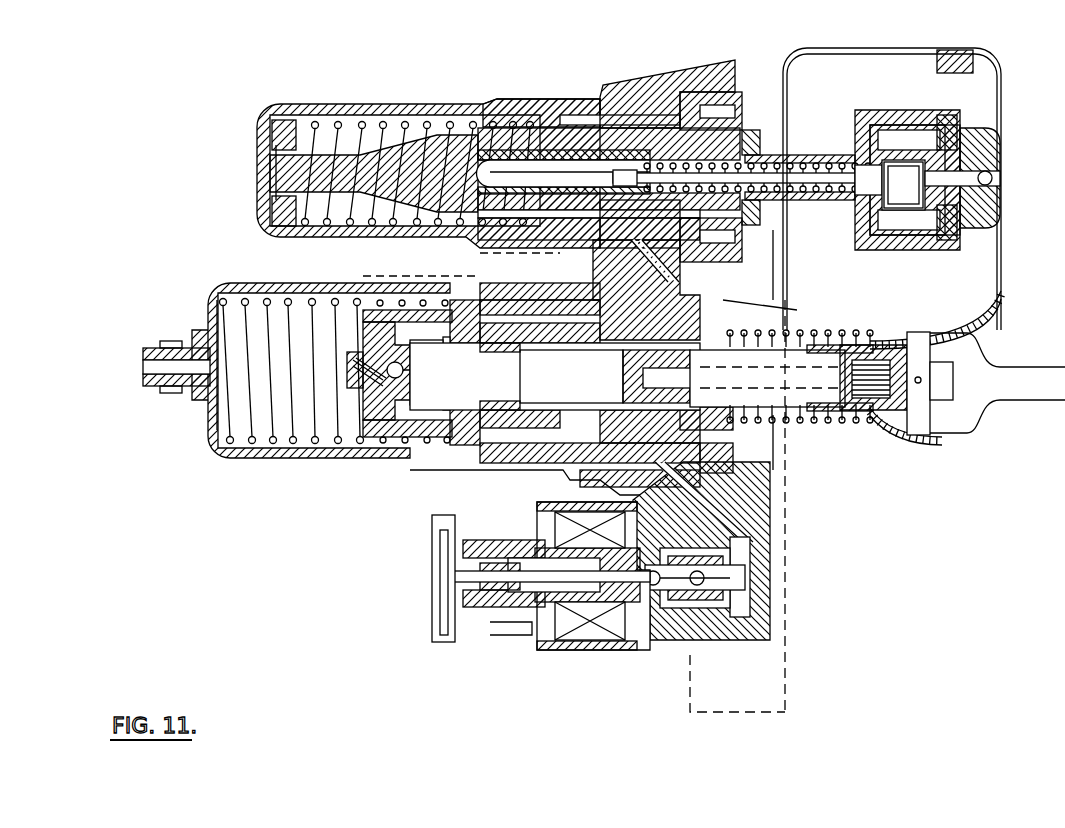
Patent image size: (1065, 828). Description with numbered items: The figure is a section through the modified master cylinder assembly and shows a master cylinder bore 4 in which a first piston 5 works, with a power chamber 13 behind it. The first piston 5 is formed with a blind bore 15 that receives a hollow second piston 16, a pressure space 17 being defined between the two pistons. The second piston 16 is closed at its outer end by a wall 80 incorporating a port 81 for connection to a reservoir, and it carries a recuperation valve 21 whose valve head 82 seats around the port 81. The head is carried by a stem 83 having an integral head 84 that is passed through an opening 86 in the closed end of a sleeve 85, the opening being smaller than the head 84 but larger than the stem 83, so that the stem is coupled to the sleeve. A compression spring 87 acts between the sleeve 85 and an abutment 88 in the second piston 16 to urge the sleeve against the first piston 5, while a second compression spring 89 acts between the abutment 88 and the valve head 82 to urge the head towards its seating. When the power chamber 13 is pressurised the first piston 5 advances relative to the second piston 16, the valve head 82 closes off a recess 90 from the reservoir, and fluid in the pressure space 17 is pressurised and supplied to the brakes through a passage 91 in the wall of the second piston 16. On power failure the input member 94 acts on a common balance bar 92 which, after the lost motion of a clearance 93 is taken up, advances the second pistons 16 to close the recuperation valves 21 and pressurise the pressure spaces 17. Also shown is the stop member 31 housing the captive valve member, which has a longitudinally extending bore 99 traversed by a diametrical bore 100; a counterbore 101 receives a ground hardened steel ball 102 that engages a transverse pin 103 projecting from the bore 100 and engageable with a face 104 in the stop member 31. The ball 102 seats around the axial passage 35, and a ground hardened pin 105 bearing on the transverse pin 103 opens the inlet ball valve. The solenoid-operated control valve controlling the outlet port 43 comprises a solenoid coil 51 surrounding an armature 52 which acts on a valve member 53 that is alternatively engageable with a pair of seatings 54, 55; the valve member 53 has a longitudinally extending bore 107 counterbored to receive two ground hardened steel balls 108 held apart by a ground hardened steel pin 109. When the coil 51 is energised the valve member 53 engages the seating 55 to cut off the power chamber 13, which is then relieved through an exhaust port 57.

The master cylinder bore 4 is at (393, 112).
The first piston 5 is at (372, 163).
The power chamber 13 is at (308, 127).
The bore 15 is at (503, 148).
The second piston 16 is at (723, 90).
The pressure space 17 is at (525, 170).
The recuperation valve 21 is at (898, 165).
The stop member 31 is at (397, 307).
The axial passage 35 is at (735, 424).
The outlet port 43 is at (765, 512).
The solenoid coil 51 is at (588, 635).
The armature 52 is at (527, 625).
The valve member 53 is at (686, 590).
The seating 54 is at (632, 645).
The seating 55 is at (750, 618).
The exhaust port 57 is at (490, 580).
The wall 80 is at (925, 125).
The port 81 is at (999, 205).
The valve head 82 is at (902, 190).
The stem 83 is at (785, 184).
The integral head 84 is at (580, 123).
The sleeve 85 is at (472, 112).
The opening 86 is at (640, 125).
The compression spring 87 is at (667, 127).
The abutment 88 is at (830, 166).
The second compression spring 89 is at (840, 200).
The recess 90 is at (952, 146).
The passage 91 is at (853, 128).
The balance bar 92 is at (960, 296).
The clearance 93 is at (999, 178).
The input member 94 is at (1040, 390).
The longitudinally extending bore 99 is at (377, 440).
The diametrical bore 100 is at (430, 437).
The counterbore 101 is at (440, 447).
The ground hardened steel ball 102 is at (465, 447).
The transverse pin 103 is at (450, 317).
The face 104 is at (493, 330).
The ground hardened pin 105 is at (363, 413).
The longitudinally extending bore 107 is at (693, 590).
The ground hardened steel balls 108 is at (740, 595).
The ground hardened steel pin 109 is at (713, 470).